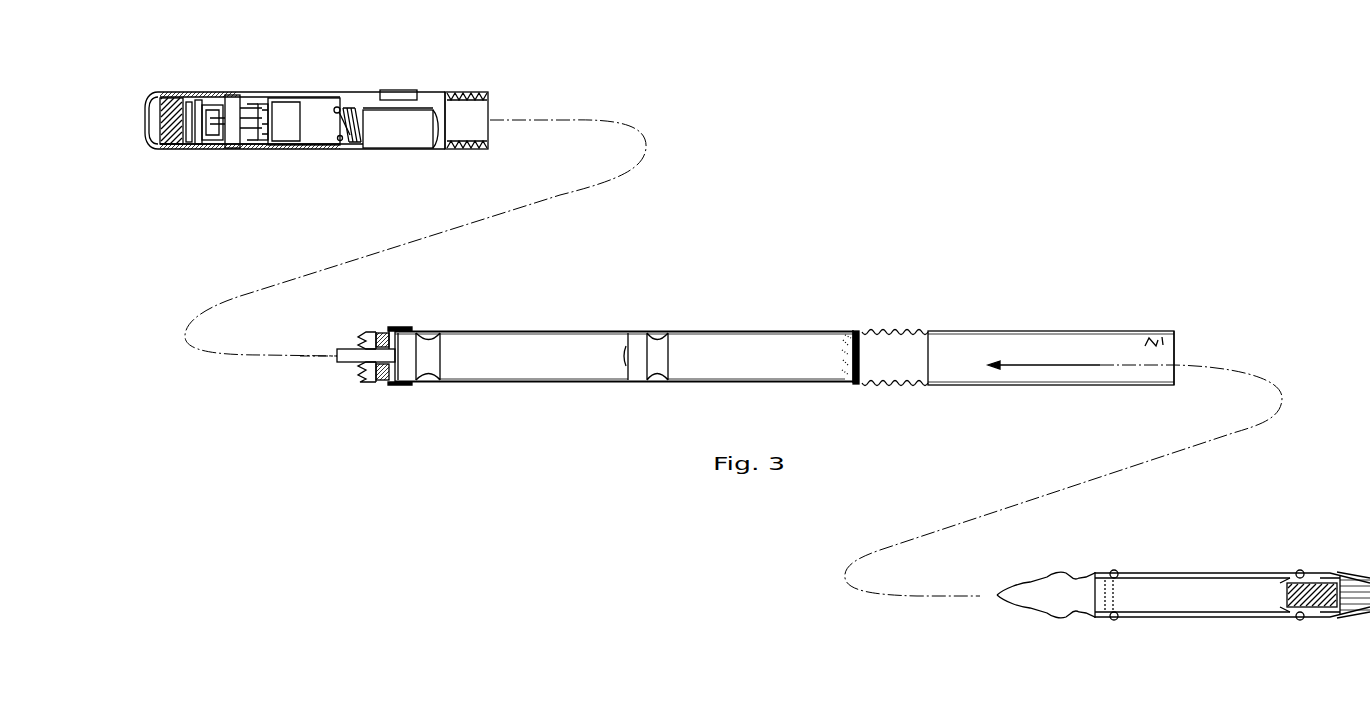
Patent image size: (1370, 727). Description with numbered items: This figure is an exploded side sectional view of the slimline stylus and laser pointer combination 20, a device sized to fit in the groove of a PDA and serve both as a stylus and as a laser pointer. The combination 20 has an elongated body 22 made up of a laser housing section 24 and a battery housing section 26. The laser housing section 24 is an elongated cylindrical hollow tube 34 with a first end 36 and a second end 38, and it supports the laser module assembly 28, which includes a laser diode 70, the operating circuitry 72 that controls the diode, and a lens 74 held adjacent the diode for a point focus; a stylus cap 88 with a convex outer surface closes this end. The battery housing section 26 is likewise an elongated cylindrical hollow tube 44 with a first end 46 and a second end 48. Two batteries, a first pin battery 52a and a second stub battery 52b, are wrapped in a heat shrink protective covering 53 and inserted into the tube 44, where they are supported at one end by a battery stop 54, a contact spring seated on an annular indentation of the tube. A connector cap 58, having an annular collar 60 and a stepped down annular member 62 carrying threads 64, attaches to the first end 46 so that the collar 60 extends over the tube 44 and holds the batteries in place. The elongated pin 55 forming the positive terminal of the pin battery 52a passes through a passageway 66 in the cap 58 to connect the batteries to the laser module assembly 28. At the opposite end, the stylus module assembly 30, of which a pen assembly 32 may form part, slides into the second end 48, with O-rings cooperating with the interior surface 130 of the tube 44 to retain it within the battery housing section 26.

The stylus and laser pointer combination 20 is at (662, 403).
The elongated body 22 is at (215, 152).
The laser housing section 24 is at (431, 91).
The battery housing section 26 is at (790, 328).
The laser module assembly 28 is at (327, 103).
The stylus module assembly 30 is at (1240, 568).
The pen assembly 32 is at (1312, 622).
The elongated cylindrical shaped hollow tube 34 is at (449, 91).
The first end 36 is at (159, 152).
The second end 38 is at (493, 91).
The elongated cylindrical shaped hollow tube 44 is at (1018, 328).
The first end 46 is at (433, 328).
The second end 48 is at (1181, 340).
The first battery 52a is at (541, 340).
The second battery 52b is at (737, 340).
The protective covering 53 is at (491, 328).
The battery stop 54 is at (860, 386).
The elongated pin 55 is at (348, 372).
The connector cap 58 is at (394, 325).
The annular collar 60 is at (421, 387).
The stepped down annular member 62 is at (378, 384).
The threads 64 is at (360, 327).
The passageway 66 is at (356, 348).
The laser diode 70 is at (229, 92).
The operating circuitry 72 is at (284, 104).
The lens 74 is at (172, 93).
The stylus cap 88 is at (149, 92).
The interior surface 130 is at (1165, 327).